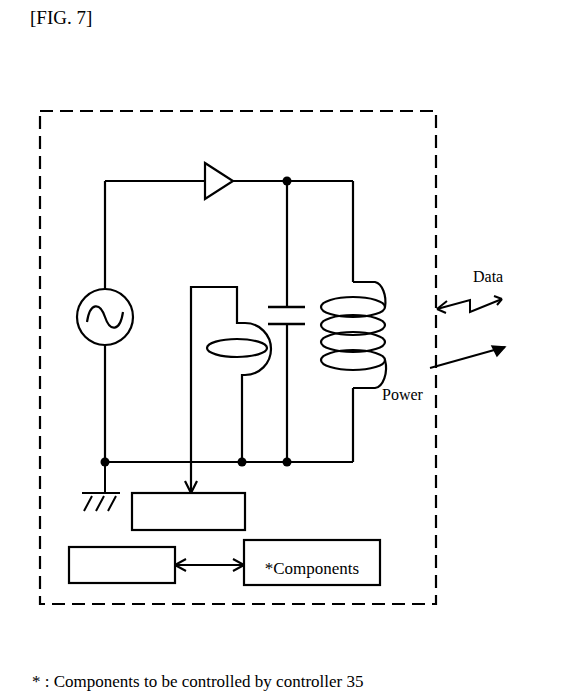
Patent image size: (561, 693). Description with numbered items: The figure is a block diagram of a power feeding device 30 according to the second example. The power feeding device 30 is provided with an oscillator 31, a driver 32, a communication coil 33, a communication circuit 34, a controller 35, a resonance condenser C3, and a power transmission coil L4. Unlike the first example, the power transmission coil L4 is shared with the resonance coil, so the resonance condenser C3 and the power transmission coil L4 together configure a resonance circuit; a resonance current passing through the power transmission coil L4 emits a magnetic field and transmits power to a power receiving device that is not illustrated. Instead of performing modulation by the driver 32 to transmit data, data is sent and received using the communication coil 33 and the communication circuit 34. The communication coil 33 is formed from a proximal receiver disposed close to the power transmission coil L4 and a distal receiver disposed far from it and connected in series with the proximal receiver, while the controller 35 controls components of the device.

The power feeding device 30 is at (410, 111).
The oscillator 31 is at (90, 295).
The driver 32 is at (223, 173).
The communication coil 33 is at (255, 380).
The communication circuit 34 is at (245, 507).
The controller 35 is at (175, 575).
The resonance condenser C3 is at (294, 299).
The power transmission coil L4 is at (358, 324).